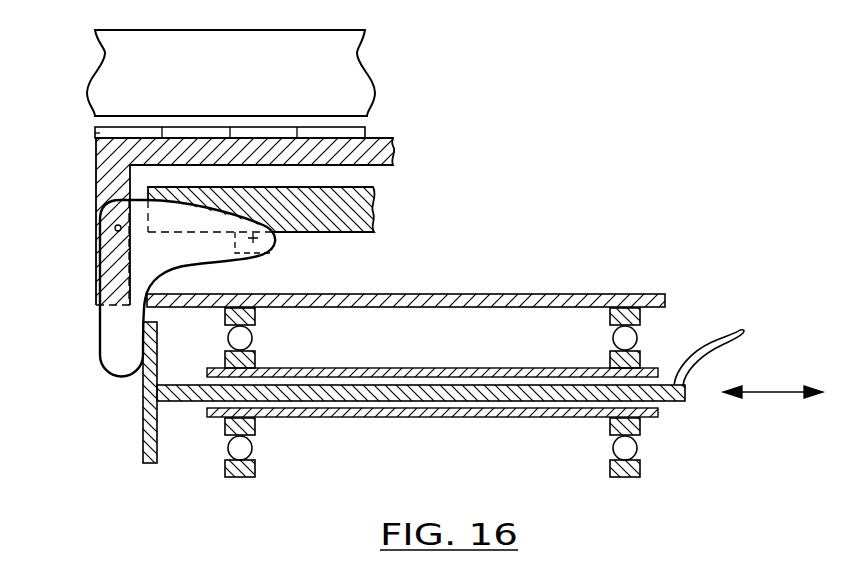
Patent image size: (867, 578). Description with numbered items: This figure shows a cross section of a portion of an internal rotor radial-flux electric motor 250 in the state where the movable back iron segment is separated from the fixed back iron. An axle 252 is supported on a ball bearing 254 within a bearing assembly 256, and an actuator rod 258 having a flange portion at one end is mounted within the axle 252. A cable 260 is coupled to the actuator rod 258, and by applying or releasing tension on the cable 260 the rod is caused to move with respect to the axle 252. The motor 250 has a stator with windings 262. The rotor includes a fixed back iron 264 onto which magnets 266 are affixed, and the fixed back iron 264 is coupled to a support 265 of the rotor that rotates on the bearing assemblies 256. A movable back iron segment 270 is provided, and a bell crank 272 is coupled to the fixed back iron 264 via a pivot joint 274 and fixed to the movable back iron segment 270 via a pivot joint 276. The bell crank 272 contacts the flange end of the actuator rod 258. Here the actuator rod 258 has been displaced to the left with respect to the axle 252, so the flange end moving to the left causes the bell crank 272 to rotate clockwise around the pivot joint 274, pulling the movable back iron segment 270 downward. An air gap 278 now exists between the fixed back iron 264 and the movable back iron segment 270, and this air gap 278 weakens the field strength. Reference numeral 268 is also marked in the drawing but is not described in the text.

The internal rotor radial-flux electric motor 250 is at (562, 64).
The axle 252 is at (440, 368).
The ball bearing 254 is at (234, 338).
The bearing assembly 256 is at (262, 312).
The actuator rod 258 is at (150, 465).
The cable 260 is at (735, 345).
The windings 262 is at (235, 91).
The fixed back iron 264 is at (106, 200).
The support 265 is at (437, 300).
The magnets 266 is at (96, 133).
The mounting strip 268 is at (360, 120).
The movable back iron segment 270 is at (355, 213).
The bell crank 272 is at (190, 253).
The pivot joint 274 is at (115, 229).
The pivot joint 276 is at (258, 240).
The air gap 278 is at (353, 180).